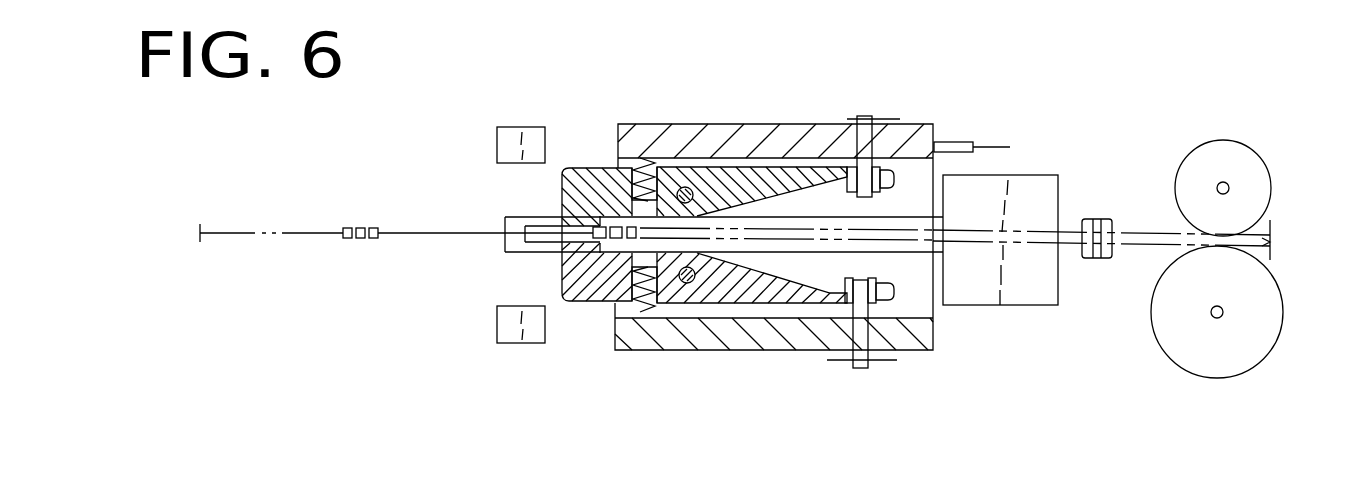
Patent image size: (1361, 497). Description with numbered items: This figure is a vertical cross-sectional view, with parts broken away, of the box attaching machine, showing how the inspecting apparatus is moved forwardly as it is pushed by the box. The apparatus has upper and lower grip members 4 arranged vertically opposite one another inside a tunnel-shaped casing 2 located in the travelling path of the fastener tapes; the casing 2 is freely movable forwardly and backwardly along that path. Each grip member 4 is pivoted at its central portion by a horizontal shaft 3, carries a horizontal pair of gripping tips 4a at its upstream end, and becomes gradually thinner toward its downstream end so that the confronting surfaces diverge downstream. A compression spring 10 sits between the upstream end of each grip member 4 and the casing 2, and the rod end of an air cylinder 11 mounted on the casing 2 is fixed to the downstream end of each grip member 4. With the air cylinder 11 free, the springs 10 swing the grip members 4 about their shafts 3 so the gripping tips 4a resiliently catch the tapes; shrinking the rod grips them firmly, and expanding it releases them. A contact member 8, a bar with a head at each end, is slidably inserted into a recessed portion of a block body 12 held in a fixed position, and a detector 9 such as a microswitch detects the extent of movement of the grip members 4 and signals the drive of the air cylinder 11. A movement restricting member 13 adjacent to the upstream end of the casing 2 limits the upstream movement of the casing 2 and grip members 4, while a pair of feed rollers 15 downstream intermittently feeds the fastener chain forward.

The casing 2 is at (914, 141).
The horizontal shaft 3 is at (690, 187).
The grip member 4 is at (747, 185).
The gripping tip 4a is at (512, 217).
The contact member 8 is at (1091, 219).
The detector 9 is at (955, 142).
The compression spring 10 is at (645, 162).
The air cylinder 11 is at (863, 117).
The block body 12 is at (1004, 300).
The movement restricting member 13 is at (521, 127).
The feed rollers 15 is at (1267, 164).